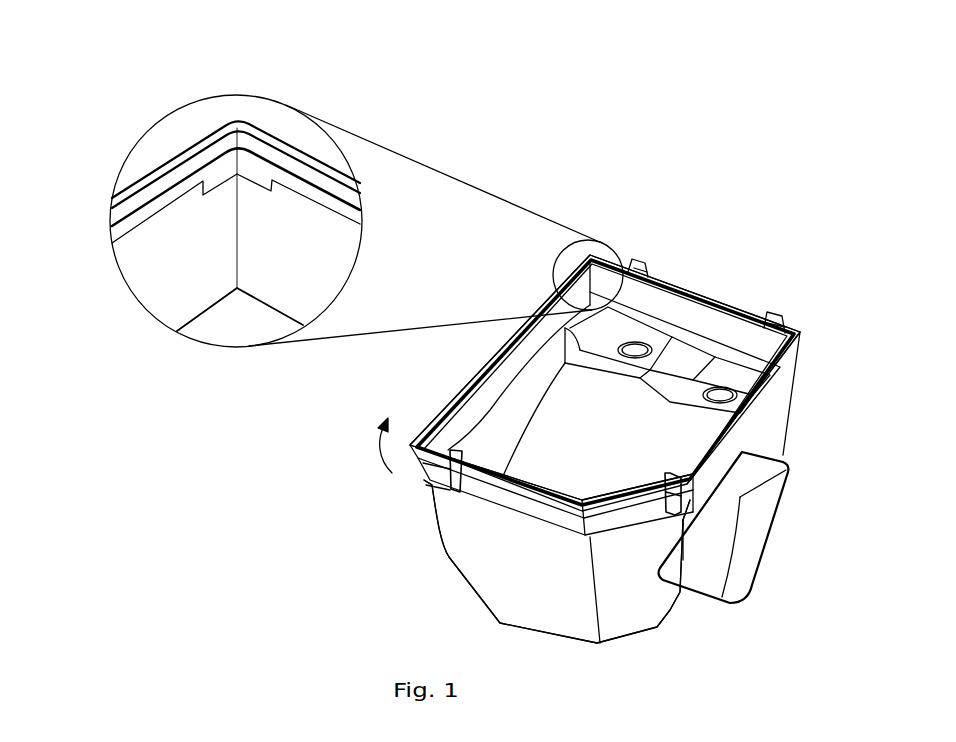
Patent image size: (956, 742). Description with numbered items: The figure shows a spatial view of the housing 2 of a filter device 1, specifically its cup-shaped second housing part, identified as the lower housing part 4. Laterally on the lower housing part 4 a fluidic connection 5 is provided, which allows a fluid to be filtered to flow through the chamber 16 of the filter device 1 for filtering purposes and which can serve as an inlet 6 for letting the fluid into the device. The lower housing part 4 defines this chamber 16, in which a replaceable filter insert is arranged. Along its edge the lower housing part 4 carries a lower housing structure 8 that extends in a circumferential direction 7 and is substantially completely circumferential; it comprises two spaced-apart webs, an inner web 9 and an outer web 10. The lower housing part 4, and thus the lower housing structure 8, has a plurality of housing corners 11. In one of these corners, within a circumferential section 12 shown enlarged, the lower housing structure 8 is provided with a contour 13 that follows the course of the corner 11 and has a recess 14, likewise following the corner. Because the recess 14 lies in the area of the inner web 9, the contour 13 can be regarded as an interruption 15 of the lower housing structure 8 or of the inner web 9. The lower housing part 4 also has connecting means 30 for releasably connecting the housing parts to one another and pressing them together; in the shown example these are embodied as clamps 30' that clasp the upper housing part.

The filter device 1 is at (757, 153).
The housing 2 is at (641, 163).
The lower housing part 4 is at (445, 584).
The fluidic connection 5 is at (768, 527).
The inlet 6 is at (754, 533).
The circumferential direction 7 is at (372, 450).
The lower housing structure 8 is at (330, 180).
The inner web 9 is at (462, 373).
The outer web 10 is at (440, 405).
The housing corners 11 is at (590, 245).
The circumferential section 12 is at (245, 102).
The contour 13 is at (252, 195).
The recess 14 is at (253, 172).
The interruption 15 is at (236, 169).
The chamber 16 is at (582, 460).
The connecting means 30 is at (727, 354).
The clamp 30' is at (402, 488).